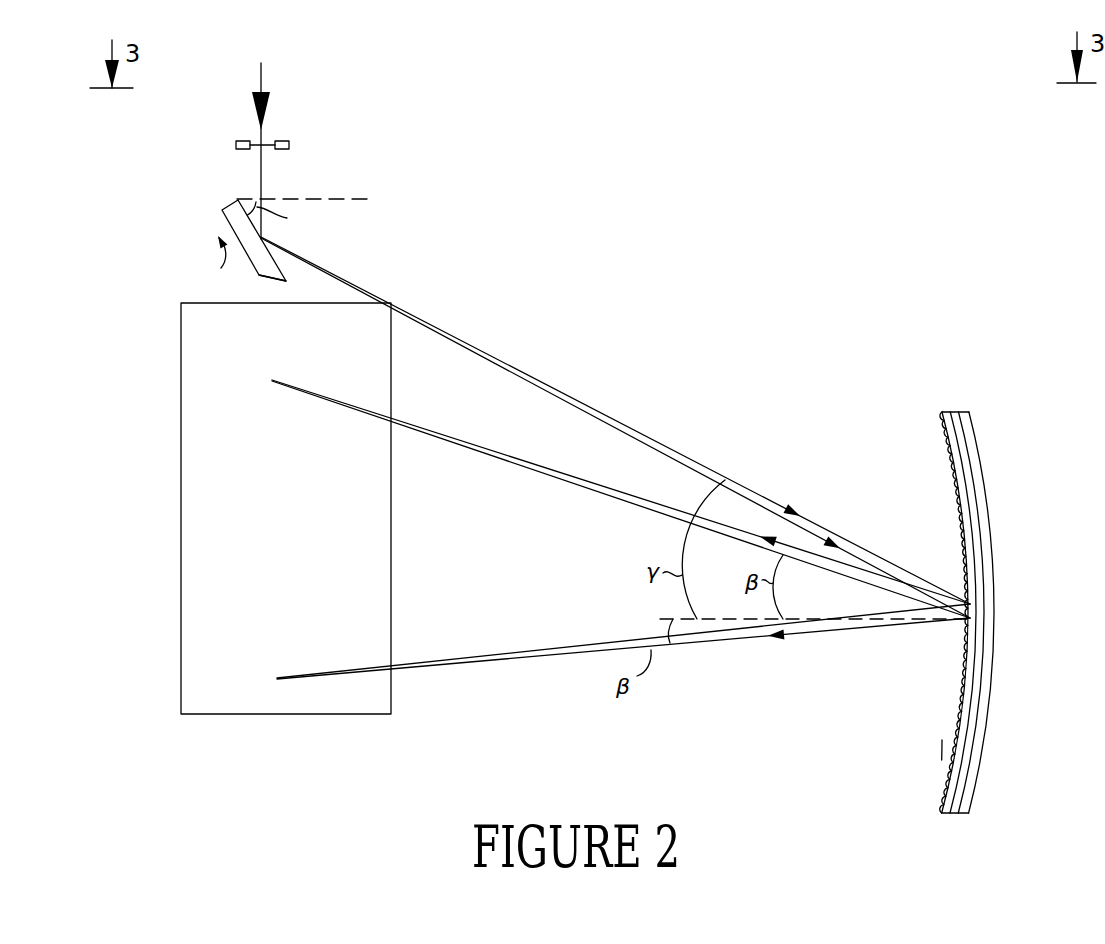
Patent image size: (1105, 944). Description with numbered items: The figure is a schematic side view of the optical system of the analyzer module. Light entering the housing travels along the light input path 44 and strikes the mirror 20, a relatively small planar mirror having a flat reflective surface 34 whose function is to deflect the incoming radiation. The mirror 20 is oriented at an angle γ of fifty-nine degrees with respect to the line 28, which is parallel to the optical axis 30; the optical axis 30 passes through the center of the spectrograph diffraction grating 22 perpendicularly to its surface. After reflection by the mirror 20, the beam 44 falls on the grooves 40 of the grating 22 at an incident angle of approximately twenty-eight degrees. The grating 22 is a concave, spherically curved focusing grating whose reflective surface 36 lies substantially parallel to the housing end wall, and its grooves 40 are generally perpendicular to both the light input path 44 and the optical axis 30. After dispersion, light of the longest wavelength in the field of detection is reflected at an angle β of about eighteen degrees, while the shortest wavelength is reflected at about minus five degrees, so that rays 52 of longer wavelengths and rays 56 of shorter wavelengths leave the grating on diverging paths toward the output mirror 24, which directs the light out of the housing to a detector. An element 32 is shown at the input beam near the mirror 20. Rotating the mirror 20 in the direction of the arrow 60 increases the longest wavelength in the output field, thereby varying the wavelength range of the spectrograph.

The mirror 20 is at (228, 205).
The spectrograph diffraction grating 22 is at (981, 465).
The output mirror 24 is at (390, 579).
The line 28 is at (334, 195).
The optical axis 30 is at (665, 622).
The mirror pivot 32 is at (280, 140).
The flat reflective surface 34 is at (286, 274).
The reflective surface 36 is at (935, 745).
The grooves 40 is at (951, 462).
The light input path 44 is at (588, 400).
The rays of light of longer wavelengths 52 is at (518, 465).
The rays of light of shorter wavelengths 56 is at (505, 661).
The arrow 60 is at (213, 248).